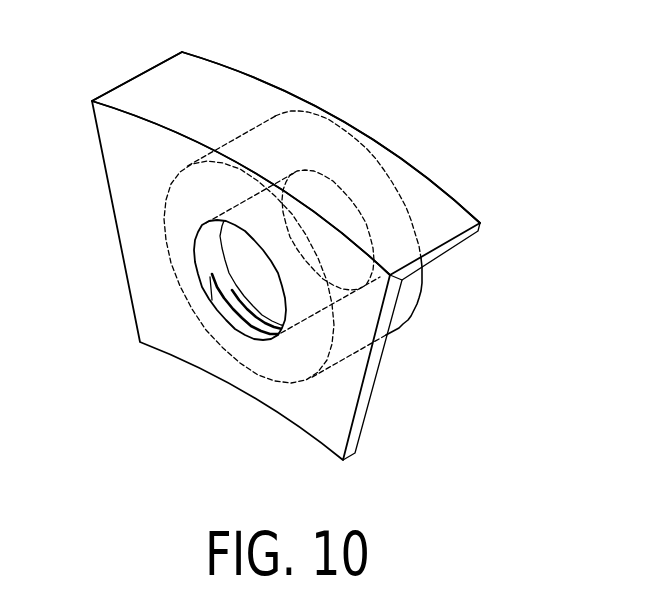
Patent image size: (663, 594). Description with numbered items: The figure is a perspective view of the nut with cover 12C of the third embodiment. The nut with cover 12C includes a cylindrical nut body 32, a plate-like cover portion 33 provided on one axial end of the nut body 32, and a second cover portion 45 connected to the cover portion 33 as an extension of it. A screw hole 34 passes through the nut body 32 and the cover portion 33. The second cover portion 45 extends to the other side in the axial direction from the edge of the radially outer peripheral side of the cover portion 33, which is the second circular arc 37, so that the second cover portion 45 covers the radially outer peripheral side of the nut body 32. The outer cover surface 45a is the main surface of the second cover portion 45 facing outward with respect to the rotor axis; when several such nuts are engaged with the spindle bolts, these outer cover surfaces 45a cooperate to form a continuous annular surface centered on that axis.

The nut with cover 12C is at (370, 111).
The nut body 32 is at (407, 302).
The cover portion 33 is at (343, 405).
The screw hole 34 is at (212, 275).
The second circular arc 37 is at (142, 117).
The second cover portion 45 is at (437, 255).
The outer cover surface 45a is at (425, 200).